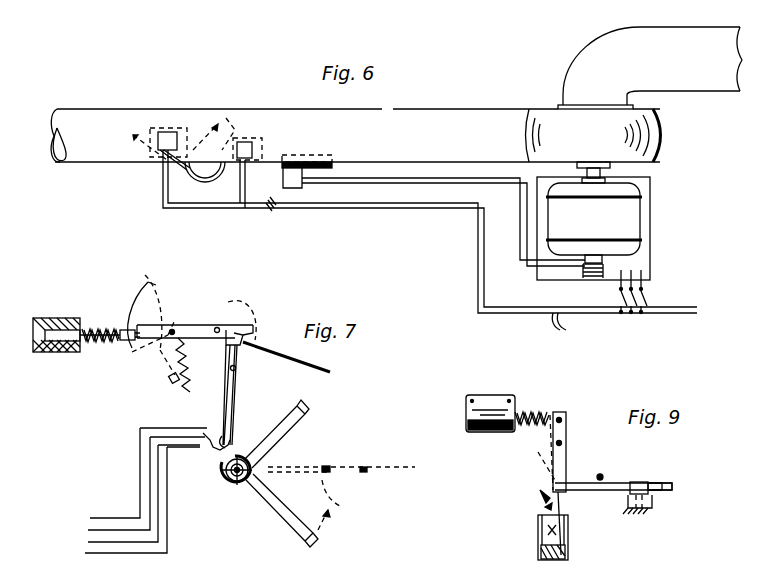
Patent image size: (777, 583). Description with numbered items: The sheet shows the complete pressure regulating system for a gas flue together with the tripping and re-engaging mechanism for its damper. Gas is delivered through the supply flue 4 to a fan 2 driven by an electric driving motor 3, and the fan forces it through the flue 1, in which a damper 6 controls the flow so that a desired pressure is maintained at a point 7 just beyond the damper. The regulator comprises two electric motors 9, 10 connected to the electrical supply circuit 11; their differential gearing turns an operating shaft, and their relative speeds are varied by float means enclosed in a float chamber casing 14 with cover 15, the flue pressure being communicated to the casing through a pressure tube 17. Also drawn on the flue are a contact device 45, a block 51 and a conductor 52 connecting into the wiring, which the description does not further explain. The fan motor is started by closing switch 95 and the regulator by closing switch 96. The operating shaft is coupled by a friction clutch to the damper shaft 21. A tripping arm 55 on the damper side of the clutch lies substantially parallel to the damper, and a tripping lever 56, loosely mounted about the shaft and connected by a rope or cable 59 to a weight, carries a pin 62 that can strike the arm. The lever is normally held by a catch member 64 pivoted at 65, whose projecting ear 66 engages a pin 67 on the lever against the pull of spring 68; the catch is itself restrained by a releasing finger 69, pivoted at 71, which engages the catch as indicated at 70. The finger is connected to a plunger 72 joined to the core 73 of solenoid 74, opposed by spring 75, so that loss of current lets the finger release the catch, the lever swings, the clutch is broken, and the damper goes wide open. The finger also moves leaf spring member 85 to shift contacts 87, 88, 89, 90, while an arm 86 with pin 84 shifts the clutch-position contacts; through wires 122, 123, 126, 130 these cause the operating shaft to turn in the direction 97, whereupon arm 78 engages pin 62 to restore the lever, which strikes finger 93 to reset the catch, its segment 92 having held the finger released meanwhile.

In FIG. 6, the flue 1 is at (437, 115).
In FIG. 6, the fan 2 is at (648, 153).
In FIG. 6, the electric driving motor 3 is at (632, 218).
In FIG. 6, the flue 4 is at (720, 88).
In FIG. 6, the damper 6 is at (193, 148).
In FIG. 6, the point in the flue 7 is at (150, 137).
In FIG. 6, the electric motor 9 is at (172, 128).
In FIG. 6, the electric motor 10 is at (256, 143).
In FIG. 6, the electrical supply circuit 11 is at (580, 318).
In FIG. 6, the float chamber casing 14 is at (192, 176).
In FIG. 6, the cover 15 is at (213, 180).
In FIG. 6, the pressure tube 17 is at (145, 145).
In FIG. 7, the damper shaft 21 is at (237, 482).
In FIG. 6, the contact strip 45 is at (292, 156).
In FIG. 6, the contact block 51 is at (309, 172).
In FIG. 6, the conductor 52 is at (403, 168).
In FIG. 7, the tripping arm 55 is at (295, 434).
In FIG. 7, the tripping lever 56 is at (249, 395).
In FIG. 9, the tripping lever 56 is at (655, 509).
In FIG. 7, the rope or cable 59 is at (330, 368).
In FIG. 7, the pin 62 is at (238, 370).
In FIG. 7, the catch member 64 is at (178, 296).
In FIG. 9, the catch member 64 is at (618, 491).
In FIG. 7, the pivot 65 is at (222, 328).
In FIG. 9, the pivot 65 is at (633, 483).
In FIG. 7, the projecting ear 66 is at (246, 338).
In FIG. 9, the projecting ear 66 is at (662, 486).
In FIG. 7, the pin 67 is at (226, 352).
In FIG. 9, the pin 67 is at (652, 482).
In FIG. 7, the spring 68 is at (186, 392).
In FIG. 9, the spring 68 is at (604, 475).
In FIG. 7, the releasing finger 69 is at (160, 347).
In FIG. 9, the releasing finger 69 is at (601, 466).
In FIG. 9, the engagement point 70 is at (568, 496).
In FIG. 9, the pivot 71 is at (566, 449).
In FIG. 7, the plunger 72 is at (119, 343).
In FIG. 9, the plunger 72 is at (567, 418).
In FIG. 7, the core 73 is at (70, 353).
In FIG. 7, the solenoid 74 is at (55, 355).
In FIG. 9, the solenoid 74 is at (490, 435).
In FIG. 7, the spring 75 is at (97, 320).
In FIG. 9, the spring 75 is at (530, 400).
In FIG. 7, the arm 78 is at (294, 520).
In FIG. 7, the pin 84 is at (218, 466).
In FIG. 9, the leaf spring member 85 is at (540, 492).
In FIG. 7, the arm 86 is at (240, 412).
In FIG. 9, the contact 87 is at (540, 536).
In FIG. 9, the contact 88 is at (545, 506).
In FIG. 9, the contact 89 is at (568, 522).
In FIG. 9, the contact 90 is at (568, 548).
In FIG. 7, the segment 92 is at (148, 307).
In FIG. 7, the finger 93 is at (196, 365).
In FIG. 6, the switch 95 is at (643, 294).
In FIG. 6, the switch 96 is at (273, 210).
In FIG. 7, the direction of rotation 97 is at (325, 533).
In FIG. 7, the wire 122 is at (170, 526).
In FIG. 7, the wire 123 is at (174, 498).
In FIG. 7, the wire 126 is at (140, 460).
In FIG. 7, the wire 130 is at (148, 492).